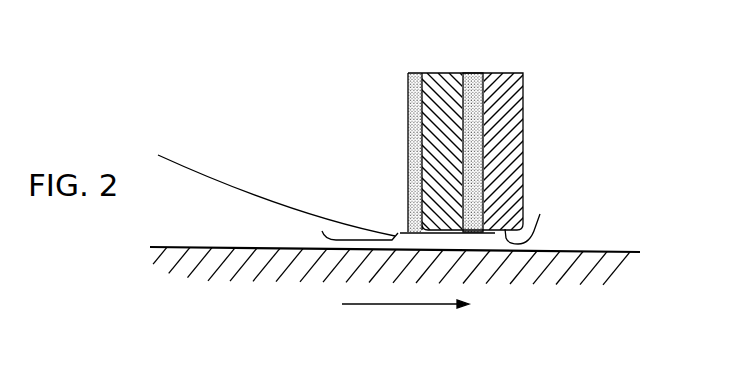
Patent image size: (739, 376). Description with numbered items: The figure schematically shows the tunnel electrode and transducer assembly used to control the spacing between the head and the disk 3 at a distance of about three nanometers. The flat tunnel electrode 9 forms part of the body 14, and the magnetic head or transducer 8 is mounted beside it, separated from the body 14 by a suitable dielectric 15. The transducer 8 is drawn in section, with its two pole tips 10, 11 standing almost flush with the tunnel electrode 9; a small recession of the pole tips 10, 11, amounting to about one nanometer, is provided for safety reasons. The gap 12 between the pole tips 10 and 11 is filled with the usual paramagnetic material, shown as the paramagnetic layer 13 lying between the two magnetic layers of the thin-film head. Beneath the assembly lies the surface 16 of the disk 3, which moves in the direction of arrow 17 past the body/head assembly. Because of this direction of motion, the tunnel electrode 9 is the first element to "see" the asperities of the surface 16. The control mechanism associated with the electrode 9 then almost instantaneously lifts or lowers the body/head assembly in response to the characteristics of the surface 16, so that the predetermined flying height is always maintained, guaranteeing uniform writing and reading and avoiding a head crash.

The disk 3 is at (256, 283).
The transducer 8 is at (531, 123).
The tunnel electrode 9 is at (351, 231).
The pole tip 10 is at (451, 233).
The pole tip 11 is at (537, 217).
The gap 12 is at (476, 234).
The paramagnetic layer 13 is at (469, 72).
The body 14 is at (304, 173).
The dielectric 15 is at (415, 73).
The surface 16 is at (572, 251).
The arrow 17 is at (372, 306).